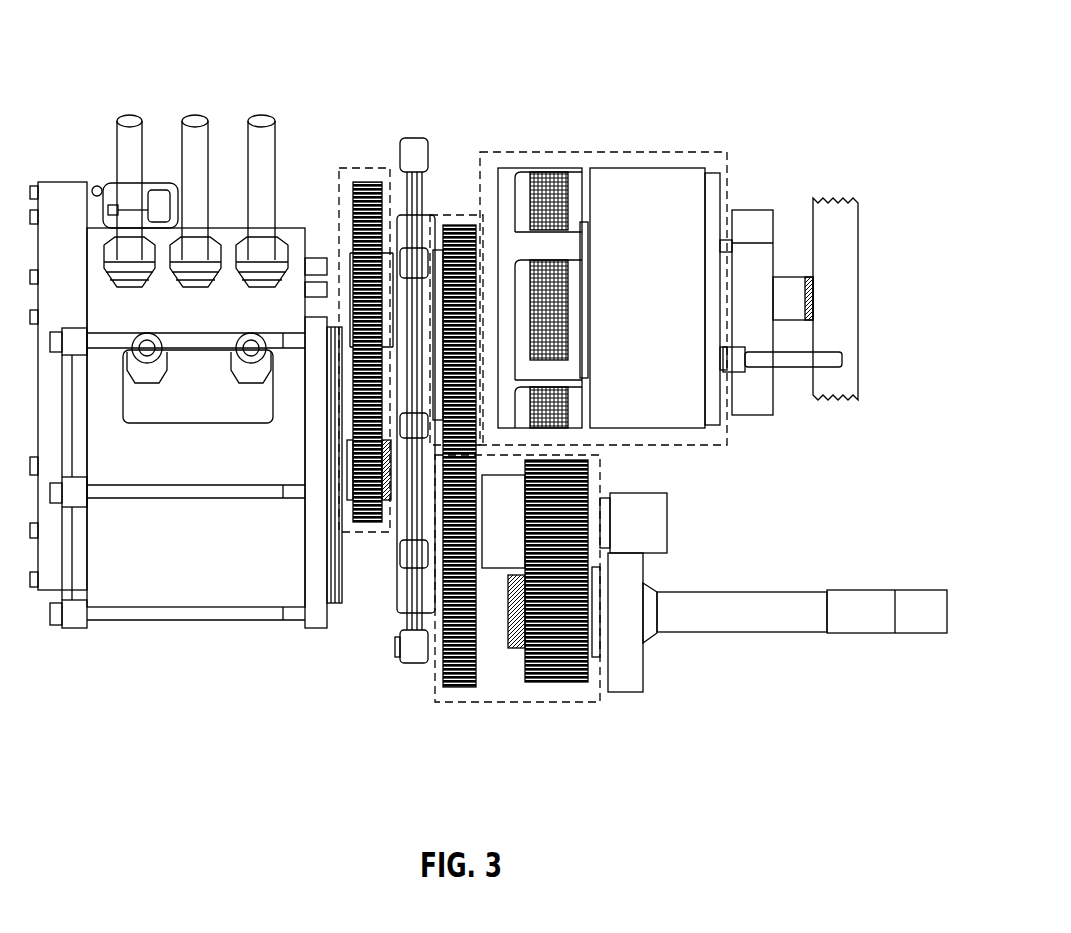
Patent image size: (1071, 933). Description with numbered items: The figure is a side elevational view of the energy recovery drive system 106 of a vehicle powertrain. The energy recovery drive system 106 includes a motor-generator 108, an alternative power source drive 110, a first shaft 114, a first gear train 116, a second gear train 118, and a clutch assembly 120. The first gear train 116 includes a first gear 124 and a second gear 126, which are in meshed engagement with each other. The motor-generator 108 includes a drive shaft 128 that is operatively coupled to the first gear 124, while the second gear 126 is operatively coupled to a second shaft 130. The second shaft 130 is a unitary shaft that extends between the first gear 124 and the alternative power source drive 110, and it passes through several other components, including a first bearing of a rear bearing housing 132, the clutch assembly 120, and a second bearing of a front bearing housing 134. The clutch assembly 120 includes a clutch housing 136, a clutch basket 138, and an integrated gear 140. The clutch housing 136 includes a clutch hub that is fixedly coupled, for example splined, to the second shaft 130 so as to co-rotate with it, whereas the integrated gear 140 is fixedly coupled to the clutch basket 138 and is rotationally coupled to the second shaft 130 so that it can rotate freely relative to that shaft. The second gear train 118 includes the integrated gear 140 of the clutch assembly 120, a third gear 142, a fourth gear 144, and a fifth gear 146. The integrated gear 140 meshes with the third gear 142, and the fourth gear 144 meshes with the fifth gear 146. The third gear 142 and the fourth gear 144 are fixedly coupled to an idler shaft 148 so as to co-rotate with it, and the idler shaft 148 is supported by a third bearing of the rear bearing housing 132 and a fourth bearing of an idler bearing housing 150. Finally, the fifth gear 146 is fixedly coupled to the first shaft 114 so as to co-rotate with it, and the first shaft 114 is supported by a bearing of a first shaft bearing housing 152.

The energy recovery drive system 106 is at (170, 50).
The motor-generator 108 is at (159, 577).
The alternative power source drive 110 is at (838, 222).
The first shaft 114 is at (853, 612).
The first gear train 116 is at (340, 168).
The second gear train 118 is at (435, 688).
The clutch assembly 120 is at (680, 152).
The first gear 124 is at (385, 505).
The second gear 126 is at (367, 185).
The drive shaft 128 is at (351, 466).
The second shaft 130 is at (790, 298).
The rear bearing housing 132 is at (417, 658).
The front bearing housing 134 is at (755, 215).
The clutch housing 136 is at (640, 215).
The clutch basket 138 is at (505, 180).
The integrated gear 140 is at (457, 228).
The third gear 142 is at (460, 665).
The fourth gear 144 is at (520, 555).
The fifth gear 146 is at (556, 650).
The idler shaft 148 is at (607, 520).
The idler bearing housing 150 is at (647, 521).
The first shaft bearing housing 152 is at (625, 670).